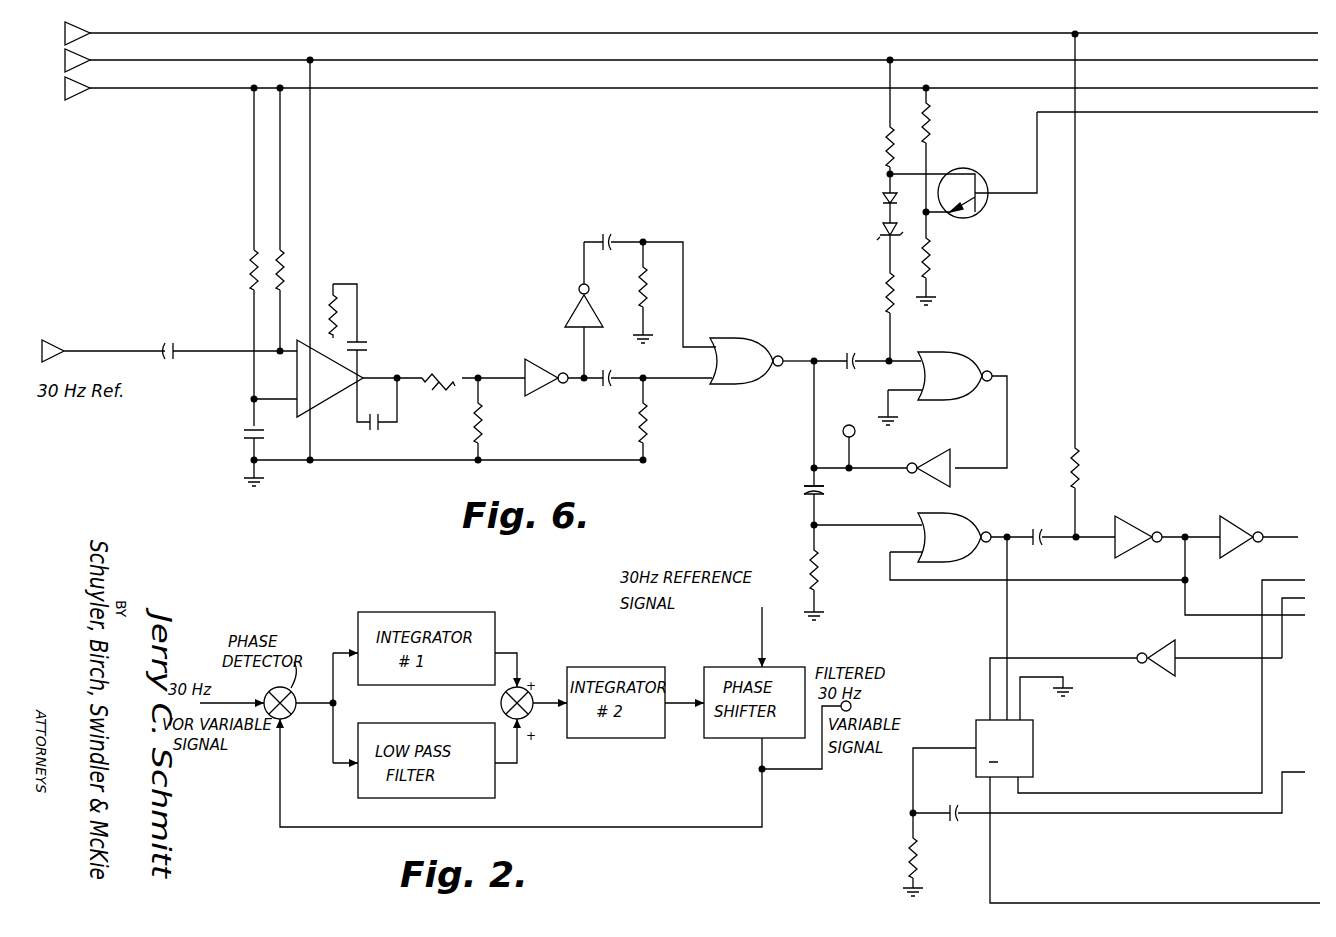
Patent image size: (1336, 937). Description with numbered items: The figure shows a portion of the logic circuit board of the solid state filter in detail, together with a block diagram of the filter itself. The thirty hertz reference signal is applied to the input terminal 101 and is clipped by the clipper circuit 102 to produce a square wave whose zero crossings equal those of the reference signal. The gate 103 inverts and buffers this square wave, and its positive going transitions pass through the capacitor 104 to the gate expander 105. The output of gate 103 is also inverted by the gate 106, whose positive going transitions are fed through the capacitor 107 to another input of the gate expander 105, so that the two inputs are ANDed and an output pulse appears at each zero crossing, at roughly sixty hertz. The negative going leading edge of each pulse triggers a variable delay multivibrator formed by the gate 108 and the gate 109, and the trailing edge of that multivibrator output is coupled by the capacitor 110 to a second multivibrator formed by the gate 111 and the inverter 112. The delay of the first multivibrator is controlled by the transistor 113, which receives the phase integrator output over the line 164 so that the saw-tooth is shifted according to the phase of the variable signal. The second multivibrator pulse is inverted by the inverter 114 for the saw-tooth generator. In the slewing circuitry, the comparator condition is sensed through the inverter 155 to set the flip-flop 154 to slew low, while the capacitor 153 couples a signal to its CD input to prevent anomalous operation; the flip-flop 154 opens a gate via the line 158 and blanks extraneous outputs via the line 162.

The input terminal 101 is at (63, 345).
The clipper circuit 102 is at (318, 380).
The gate 103 is at (546, 392).
The capacitor 104 is at (619, 385).
The gate expander 105 is at (727, 376).
The gate 106 is at (573, 310).
The capacitor 107 is at (614, 240).
The gate 108 is at (940, 452).
The gate 109 is at (947, 352).
The capacitor 110 is at (824, 497).
The gate 111 is at (948, 515).
The inverter 112 is at (1140, 522).
The transistor 113 is at (963, 172).
The inverter 114 is at (1250, 522).
The capacitor 153 is at (945, 812).
The flip-flop 154 is at (1030, 748).
The inverter 155 is at (1156, 676).
The line 158 is at (1279, 903).
The line 162 is at (1157, 793).
The line 164 is at (1200, 114).